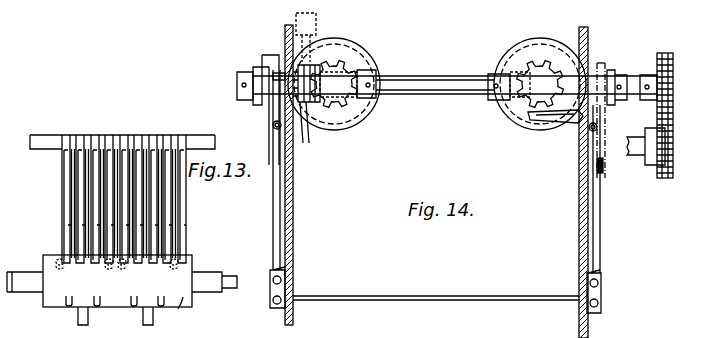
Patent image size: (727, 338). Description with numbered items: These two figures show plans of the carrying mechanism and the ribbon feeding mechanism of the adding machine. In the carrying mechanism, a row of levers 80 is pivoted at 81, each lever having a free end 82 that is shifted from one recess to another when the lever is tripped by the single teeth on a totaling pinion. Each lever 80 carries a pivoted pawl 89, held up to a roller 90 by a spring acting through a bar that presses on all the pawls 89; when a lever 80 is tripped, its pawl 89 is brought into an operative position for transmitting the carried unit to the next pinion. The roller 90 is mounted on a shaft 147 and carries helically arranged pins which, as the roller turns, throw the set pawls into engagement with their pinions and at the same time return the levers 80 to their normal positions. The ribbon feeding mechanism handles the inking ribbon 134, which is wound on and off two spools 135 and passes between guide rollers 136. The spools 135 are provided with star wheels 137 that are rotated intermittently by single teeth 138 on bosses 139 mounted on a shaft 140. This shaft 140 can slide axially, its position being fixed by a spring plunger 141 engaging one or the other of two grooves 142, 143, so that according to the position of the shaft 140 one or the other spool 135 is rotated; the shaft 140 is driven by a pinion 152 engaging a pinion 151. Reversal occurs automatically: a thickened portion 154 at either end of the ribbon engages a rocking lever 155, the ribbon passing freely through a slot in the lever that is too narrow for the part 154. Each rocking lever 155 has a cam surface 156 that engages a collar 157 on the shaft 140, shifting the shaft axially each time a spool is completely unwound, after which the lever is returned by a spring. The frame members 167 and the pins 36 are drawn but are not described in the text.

In FIG. 13, the pivot 81 is at (55, 140).
In FIG. 13, the lever 80 is at (115, 189).
In FIG. 13, the pawl 89 is at (175, 245).
In FIG. 13, the free end 82 is at (192, 260).
In FIG. 13, the shaft 147 is at (27, 275).
In FIG. 13, the pins 36 is at (143, 316).
In FIG. 13, the roller 90 is at (187, 311).
In FIG. 14, the inking ribbon 134 is at (273, 226).
In FIG. 14, the spools 135 is at (345, 50).
In FIG. 14, the guide rollers 136 is at (271, 294).
In FIG. 14, the star wheels 137 is at (345, 72).
In FIG. 14, the single teeth 138 is at (376, 76).
In FIG. 14, the bosses 139 is at (378, 98).
In FIG. 14, the shaft 140 is at (264, 92).
In FIG. 14, the spring plunger 141 is at (316, 28).
In FIG. 14, the groove 142 is at (308, 130).
In FIG. 14, the groove 143 is at (323, 110).
In FIG. 14, the pinion 151 is at (645, 136).
In FIG. 14, the pinion 152 is at (657, 106).
In FIG. 14, the thickened portion 154 is at (566, 123).
In FIG. 14, the rocking lever 155 is at (273, 126).
In FIG. 14, the cam surface 156 is at (268, 56).
In FIG. 14, the collar 157 is at (262, 66).
In FIG. 14, the frame bar 167 is at (293, 252).